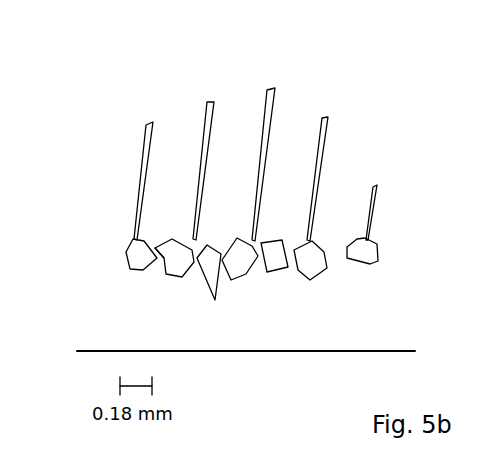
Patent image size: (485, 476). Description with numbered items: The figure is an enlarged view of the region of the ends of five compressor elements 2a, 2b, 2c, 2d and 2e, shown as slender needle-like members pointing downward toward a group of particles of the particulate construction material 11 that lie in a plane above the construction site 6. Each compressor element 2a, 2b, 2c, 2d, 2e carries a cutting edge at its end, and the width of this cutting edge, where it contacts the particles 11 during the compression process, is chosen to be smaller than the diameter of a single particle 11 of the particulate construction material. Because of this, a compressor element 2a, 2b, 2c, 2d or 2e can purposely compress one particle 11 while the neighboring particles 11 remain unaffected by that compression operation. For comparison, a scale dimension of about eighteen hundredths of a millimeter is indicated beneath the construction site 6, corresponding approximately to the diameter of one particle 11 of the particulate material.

The compressor element 2a is at (150, 121).
The compressor element 2b is at (210, 102).
The compressor element 2c is at (270, 88).
The compressor element 2d is at (326, 117).
The compressor element 2e is at (374, 186).
The particulate construction material 11 is at (210, 286).
The construction site 6 is at (397, 350).